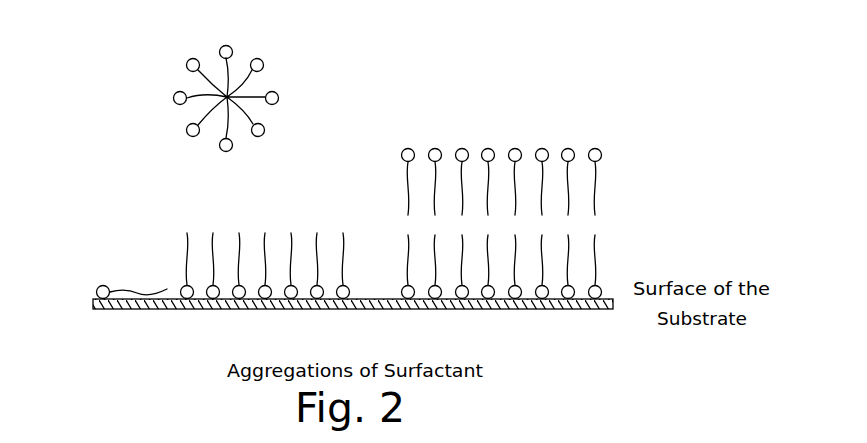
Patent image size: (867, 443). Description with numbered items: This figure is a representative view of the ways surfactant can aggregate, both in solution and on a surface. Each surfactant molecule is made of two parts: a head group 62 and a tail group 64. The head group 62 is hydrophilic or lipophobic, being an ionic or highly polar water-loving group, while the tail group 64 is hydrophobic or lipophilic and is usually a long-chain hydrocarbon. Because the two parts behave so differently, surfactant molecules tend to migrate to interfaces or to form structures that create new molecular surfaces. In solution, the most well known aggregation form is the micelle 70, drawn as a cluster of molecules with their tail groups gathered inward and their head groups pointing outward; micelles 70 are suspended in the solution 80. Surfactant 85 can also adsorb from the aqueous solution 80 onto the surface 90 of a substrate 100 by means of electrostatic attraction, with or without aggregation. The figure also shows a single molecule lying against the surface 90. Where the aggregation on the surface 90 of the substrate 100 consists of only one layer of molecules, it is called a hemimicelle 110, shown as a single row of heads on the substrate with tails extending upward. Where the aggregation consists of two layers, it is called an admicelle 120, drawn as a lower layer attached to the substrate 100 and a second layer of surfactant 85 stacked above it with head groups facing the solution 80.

The micelle 70 is at (207, 55).
The solution 80 is at (493, 33).
The surfactant 85 is at (505, 143).
The head group 62 is at (403, 152).
The tail group 64 is at (407, 182).
The hemimicelle 110 is at (178, 252).
The admicelle 120 is at (618, 235).
The surface 90 is at (125, 297).
The substrate 100 is at (160, 307).